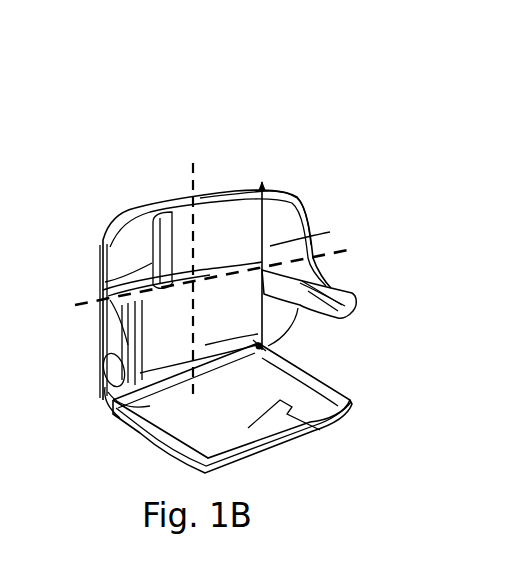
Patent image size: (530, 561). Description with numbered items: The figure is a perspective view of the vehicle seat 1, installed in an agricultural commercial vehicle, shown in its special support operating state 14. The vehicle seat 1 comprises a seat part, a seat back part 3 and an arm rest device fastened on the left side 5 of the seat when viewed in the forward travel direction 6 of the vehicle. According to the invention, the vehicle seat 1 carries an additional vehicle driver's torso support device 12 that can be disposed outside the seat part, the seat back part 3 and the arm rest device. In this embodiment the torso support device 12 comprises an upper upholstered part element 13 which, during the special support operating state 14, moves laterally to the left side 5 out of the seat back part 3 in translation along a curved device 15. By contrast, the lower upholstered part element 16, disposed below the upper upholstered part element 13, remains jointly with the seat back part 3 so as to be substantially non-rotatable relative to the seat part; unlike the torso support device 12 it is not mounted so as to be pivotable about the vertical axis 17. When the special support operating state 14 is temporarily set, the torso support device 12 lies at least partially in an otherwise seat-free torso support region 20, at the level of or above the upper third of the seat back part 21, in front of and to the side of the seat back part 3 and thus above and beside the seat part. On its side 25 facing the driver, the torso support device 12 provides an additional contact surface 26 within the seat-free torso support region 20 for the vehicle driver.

The vehicle seat 1 is at (225, 259).
The seat back part 3 is at (103, 255).
The left side 5 is at (357, 274).
The forward travel direction 6 is at (356, 496).
The additional vehicle driver's torso support device 12 is at (384, 188).
The upper upholstered part element 13 is at (214, 253).
The special support operating state 14 is at (248, 106).
The curved device 15 is at (122, 279).
The lower upholstered part element 16 is at (157, 343).
The vertical axis 17 is at (193, 170).
The seat-free torso support region 20 is at (285, 174).
The upper third of the seat back part 21 is at (263, 230).
The side facing the driver 25 is at (294, 204).
The additional contact surface 26 is at (277, 247).